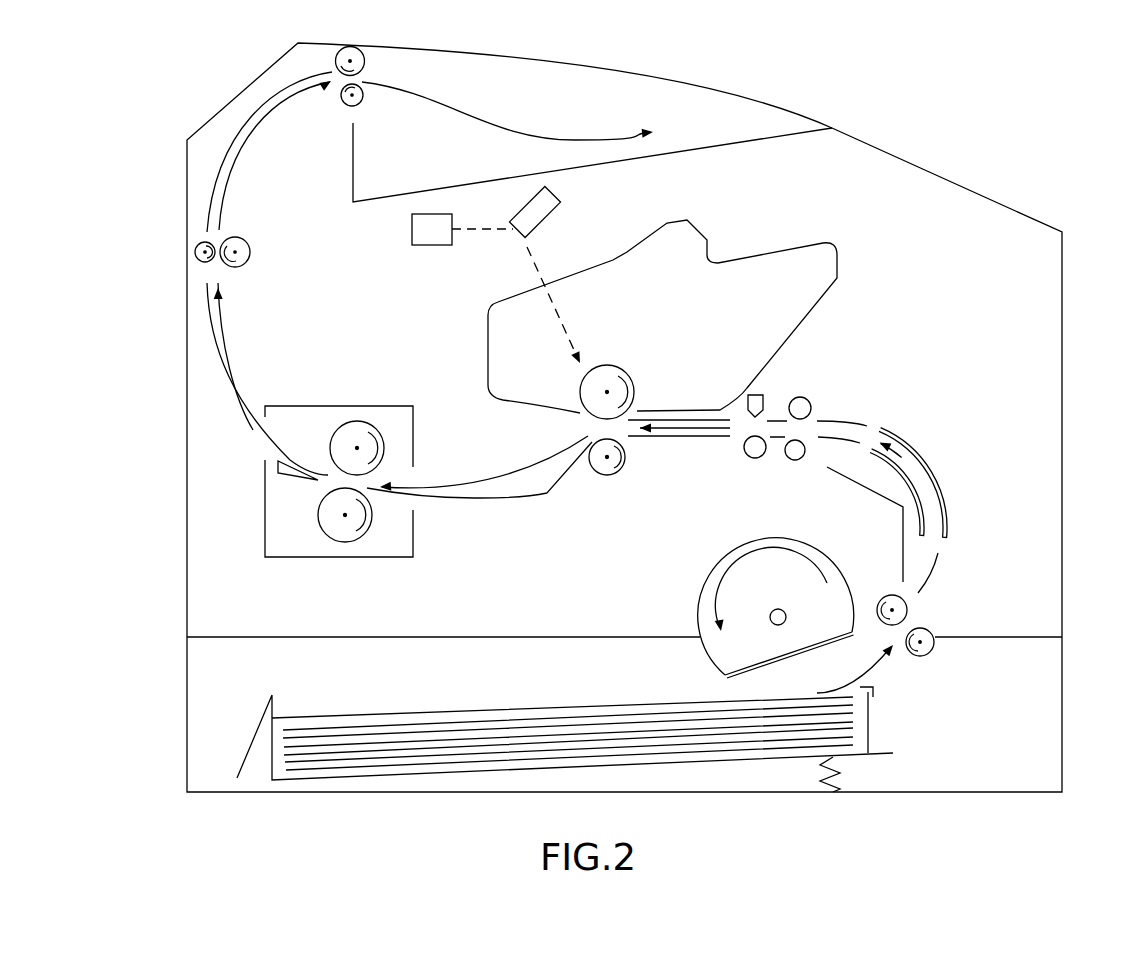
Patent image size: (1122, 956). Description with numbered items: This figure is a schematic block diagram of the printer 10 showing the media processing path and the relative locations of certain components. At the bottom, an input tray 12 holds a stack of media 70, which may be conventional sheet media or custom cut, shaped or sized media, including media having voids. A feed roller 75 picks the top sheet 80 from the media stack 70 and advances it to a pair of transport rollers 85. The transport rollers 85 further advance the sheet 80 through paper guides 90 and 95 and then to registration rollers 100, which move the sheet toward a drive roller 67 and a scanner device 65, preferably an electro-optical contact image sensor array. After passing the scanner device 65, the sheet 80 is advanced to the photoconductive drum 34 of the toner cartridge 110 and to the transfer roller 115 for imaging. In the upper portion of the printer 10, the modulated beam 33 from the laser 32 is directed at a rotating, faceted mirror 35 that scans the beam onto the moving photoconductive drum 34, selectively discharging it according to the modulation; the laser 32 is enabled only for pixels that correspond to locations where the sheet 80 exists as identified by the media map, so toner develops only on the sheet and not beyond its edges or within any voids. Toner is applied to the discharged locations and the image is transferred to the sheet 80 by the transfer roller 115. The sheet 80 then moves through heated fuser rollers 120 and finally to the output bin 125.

The printer 10 is at (1005, 158).
The input tray 12 is at (440, 712).
The laser 32 is at (428, 245).
The modulated beam 33 is at (530, 256).
The optical photoconductor 34 is at (603, 363).
The rotating faceted mirror 35 is at (560, 204).
The scanner device 65 is at (760, 390).
The drive roller 67 is at (742, 460).
The media 70 is at (407, 750).
The feed roller 75 is at (703, 606).
The top sheet 80 is at (937, 574).
The transport rollers 85 is at (885, 594).
The paper guide 90 is at (938, 490).
The paper guide 95 is at (913, 483).
The registration rollers 100 is at (803, 400).
The toner cartridge 110 is at (773, 248).
The transfer roller 115 is at (610, 477).
The heated fuser rollers 120 is at (383, 457).
The output bin 125 is at (510, 175).